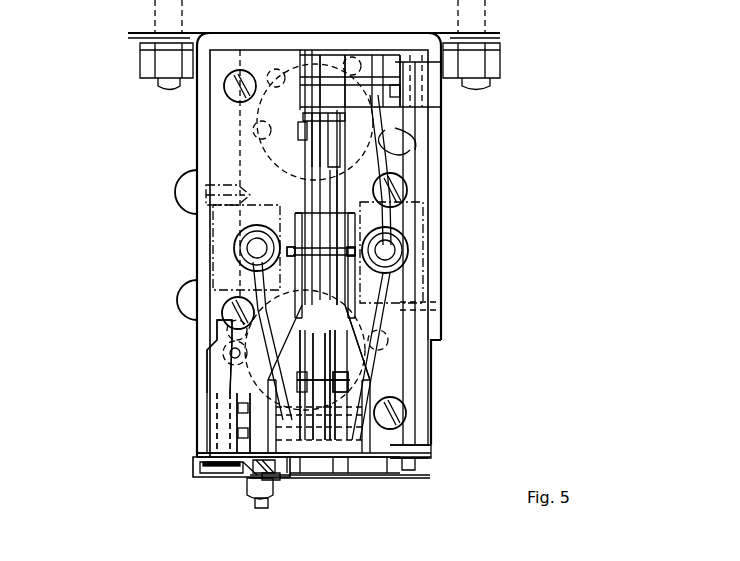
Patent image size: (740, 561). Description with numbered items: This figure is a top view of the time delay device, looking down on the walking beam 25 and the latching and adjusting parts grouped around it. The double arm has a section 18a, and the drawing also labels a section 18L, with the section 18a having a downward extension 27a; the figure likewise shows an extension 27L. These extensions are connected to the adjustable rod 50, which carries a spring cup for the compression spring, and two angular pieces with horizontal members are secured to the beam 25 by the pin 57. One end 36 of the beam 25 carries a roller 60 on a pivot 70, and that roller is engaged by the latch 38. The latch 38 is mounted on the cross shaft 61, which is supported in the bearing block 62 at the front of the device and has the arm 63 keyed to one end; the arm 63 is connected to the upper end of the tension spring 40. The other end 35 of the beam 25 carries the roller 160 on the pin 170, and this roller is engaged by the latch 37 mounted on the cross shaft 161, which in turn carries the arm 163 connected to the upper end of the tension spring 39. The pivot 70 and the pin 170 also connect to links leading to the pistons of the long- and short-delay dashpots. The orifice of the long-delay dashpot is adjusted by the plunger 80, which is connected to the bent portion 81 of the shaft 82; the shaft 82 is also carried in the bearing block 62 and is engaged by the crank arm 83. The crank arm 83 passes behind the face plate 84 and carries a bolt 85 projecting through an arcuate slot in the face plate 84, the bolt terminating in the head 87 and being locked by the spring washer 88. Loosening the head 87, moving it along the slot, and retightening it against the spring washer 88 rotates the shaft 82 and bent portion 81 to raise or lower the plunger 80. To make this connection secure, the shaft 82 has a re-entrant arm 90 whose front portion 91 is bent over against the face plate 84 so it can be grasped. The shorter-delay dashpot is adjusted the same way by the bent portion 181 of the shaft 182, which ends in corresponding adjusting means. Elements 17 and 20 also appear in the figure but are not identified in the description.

The cross shaft 161 is at (333, 80).
The arm 163 is at (380, 100).
The latch 37 is at (312, 113).
The pin 170 is at (298, 128).
The walking beam 25 is at (305, 170).
The roller 160 is at (340, 124).
The end of walking beam 35 is at (333, 148).
The bent portion 181 is at (413, 157).
The adjustable rod 50 is at (317, 227).
The link 27L is at (247, 237).
The tension spring 40 is at (235, 257).
The pin 57 is at (352, 248).
The tension spring 39 is at (372, 248).
The arm 63 is at (222, 320).
The downward extension 27a is at (385, 260).
The plunger 80 is at (205, 330).
The plate 17 is at (340, 282).
The bracket 18L is at (225, 367).
The bent portion 81 is at (232, 362).
The arm section 18a is at (350, 347).
The end of beam 36 is at (340, 362).
The pivot 70 is at (338, 377).
The roller 60 is at (337, 388).
The shaft 82 is at (223, 418).
The bearing block 62 is at (207, 432).
The shaft 182 is at (407, 423).
The crank arm 83 is at (203, 453).
The base 20 is at (410, 452).
The re-entrant arm 90 is at (193, 459).
The front portion 91 is at (200, 478).
The face plate 84 is at (237, 473).
The spring washer 88 is at (248, 485).
The head 87 is at (253, 502).
The bolt 85 is at (270, 478).
The cross shaft 61 is at (300, 407).
The latch 38 is at (323, 420).